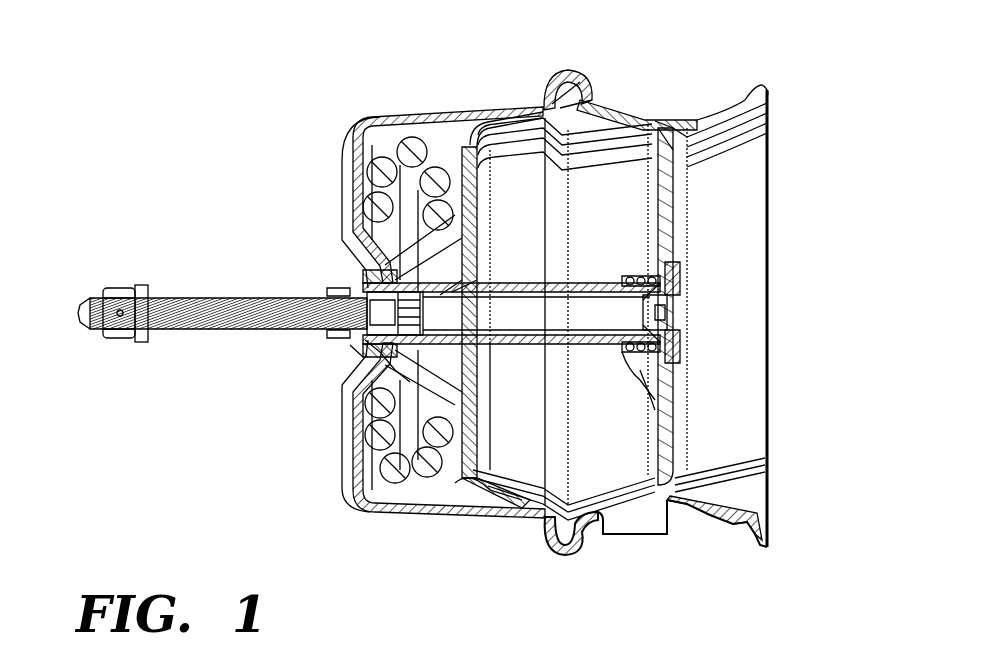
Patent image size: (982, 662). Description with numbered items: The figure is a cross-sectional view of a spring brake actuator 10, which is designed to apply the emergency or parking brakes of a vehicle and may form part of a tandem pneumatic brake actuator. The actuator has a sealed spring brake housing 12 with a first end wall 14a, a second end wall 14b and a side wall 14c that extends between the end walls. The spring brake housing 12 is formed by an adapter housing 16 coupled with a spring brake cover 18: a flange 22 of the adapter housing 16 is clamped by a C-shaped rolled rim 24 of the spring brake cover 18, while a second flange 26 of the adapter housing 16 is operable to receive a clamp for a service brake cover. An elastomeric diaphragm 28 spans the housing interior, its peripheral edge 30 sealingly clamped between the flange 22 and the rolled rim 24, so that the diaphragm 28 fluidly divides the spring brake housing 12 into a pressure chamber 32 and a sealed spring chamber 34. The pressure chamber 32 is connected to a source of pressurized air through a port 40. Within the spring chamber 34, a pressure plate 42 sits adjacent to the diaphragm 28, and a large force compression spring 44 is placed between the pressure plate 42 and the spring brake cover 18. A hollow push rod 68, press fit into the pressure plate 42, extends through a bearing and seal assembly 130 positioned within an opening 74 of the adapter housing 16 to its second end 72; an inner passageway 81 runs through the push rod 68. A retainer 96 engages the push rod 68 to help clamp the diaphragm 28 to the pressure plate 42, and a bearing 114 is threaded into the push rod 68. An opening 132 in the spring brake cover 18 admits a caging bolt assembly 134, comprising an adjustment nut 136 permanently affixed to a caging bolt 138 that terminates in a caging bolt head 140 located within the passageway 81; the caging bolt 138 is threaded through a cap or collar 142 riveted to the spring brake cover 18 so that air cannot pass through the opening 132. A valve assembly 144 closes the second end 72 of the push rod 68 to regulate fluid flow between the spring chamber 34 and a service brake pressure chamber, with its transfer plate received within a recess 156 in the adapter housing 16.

The spring brake actuator 10 is at (318, 135).
The spring brake housing 12 is at (512, 95).
The first end wall 14a is at (342, 213).
The second end wall 14b is at (675, 225).
The side wall 14c is at (440, 110).
The adapter housing 16 is at (657, 119).
The spring brake cover 18 is at (340, 495).
The flange 22 is at (592, 104).
The C-shaped rolled rim 24 is at (562, 70).
The flange 26 is at (745, 84).
The elastomeric diaphragm 28 is at (540, 518).
The peripheral edge 30 is at (585, 92).
The pressure chamber 32 is at (588, 219).
The spring chamber 34 is at (383, 130).
The port 40 is at (638, 536).
The pressure plate 42 is at (440, 510).
The large force compression spring 44 is at (378, 403).
The hollow push rod 68 is at (512, 346).
The second end 72 is at (672, 356).
The opening 74 is at (668, 268).
The passageway 81 is at (533, 328).
The retainer 96 is at (470, 280).
The bearing 114 is at (365, 348).
The bearing and seal assembly 130 is at (676, 408).
The opening 132 is at (352, 290).
The caging bolt assembly 134 is at (122, 280).
The adjustment nut 136 is at (108, 290).
The caging bolt 138 is at (182, 332).
The caging bolt head 140 is at (425, 316).
The cap or collar 142 is at (333, 338).
The valve assembly 144 is at (672, 312).
The recess 156 is at (670, 380).